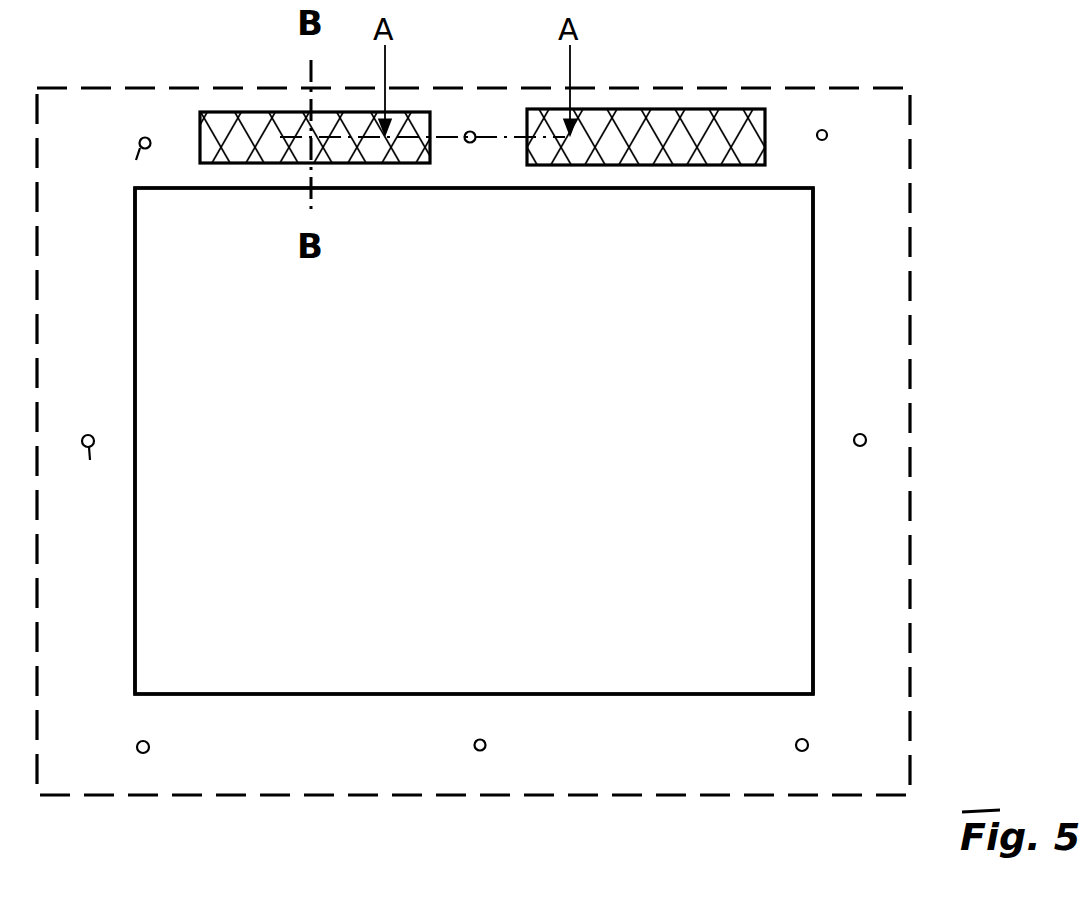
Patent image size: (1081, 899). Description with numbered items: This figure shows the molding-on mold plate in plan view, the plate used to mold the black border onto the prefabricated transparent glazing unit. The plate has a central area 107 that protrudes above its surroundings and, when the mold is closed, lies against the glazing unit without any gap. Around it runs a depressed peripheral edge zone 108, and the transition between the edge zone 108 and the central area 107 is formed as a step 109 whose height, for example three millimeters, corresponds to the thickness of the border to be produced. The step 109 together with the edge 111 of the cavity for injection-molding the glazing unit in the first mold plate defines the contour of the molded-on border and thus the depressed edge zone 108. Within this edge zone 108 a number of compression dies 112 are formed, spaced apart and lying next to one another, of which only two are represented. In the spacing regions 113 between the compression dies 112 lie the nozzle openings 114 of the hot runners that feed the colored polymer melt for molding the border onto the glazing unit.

The central area 107 is at (640, 388).
The depressed peripheral edge zone 108 is at (868, 311).
The step 109 is at (137, 295).
The edge of the cavity 111 is at (912, 502).
The compression die 112 is at (240, 148).
The spacing region 113 is at (155, 176).
The nozzle opening 114 is at (823, 746).